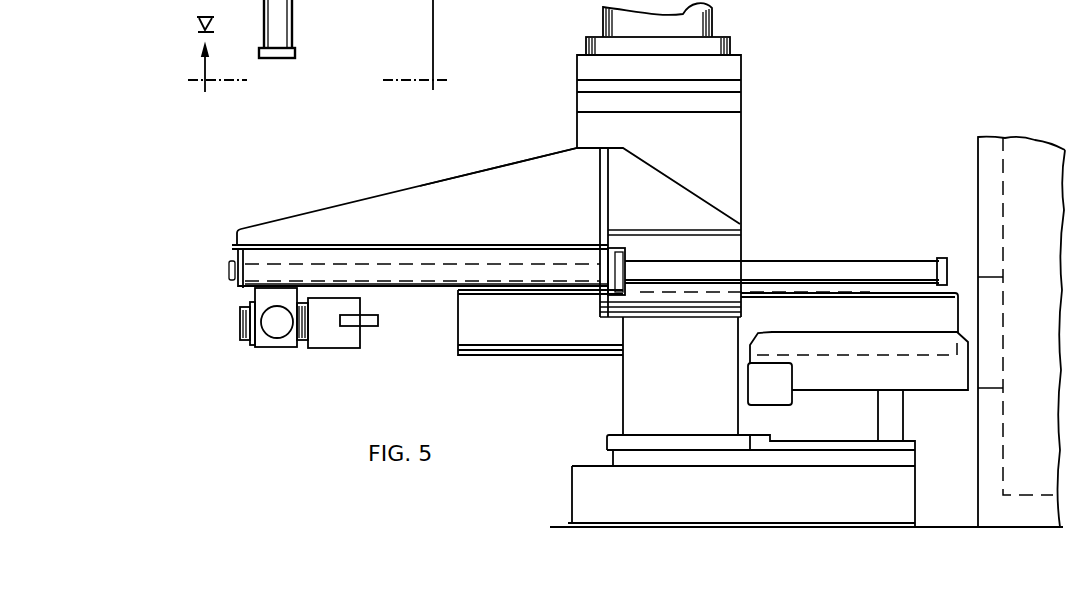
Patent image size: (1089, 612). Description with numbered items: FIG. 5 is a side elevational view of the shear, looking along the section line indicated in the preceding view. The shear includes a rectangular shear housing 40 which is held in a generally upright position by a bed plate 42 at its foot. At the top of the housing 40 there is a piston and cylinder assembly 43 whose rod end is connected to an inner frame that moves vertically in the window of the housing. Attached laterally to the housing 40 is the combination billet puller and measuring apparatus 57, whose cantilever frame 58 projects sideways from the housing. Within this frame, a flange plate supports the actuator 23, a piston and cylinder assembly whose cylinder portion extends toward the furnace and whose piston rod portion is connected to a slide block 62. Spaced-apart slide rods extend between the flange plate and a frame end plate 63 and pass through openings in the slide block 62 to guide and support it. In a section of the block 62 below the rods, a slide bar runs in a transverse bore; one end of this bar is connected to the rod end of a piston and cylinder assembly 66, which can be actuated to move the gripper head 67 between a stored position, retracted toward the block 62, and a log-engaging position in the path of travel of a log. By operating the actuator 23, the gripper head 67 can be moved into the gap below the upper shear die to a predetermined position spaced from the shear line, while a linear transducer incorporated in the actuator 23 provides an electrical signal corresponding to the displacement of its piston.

The actuator 23 is at (832, 260).
The shear housing 40 is at (727, 130).
The bed plate 42 is at (572, 485).
The piston and cylinder assembly 43 is at (712, 22).
The combination billet puller and measuring apparatus 57 is at (447, 180).
The cantilever frame 58 is at (366, 200).
The slide block 62 is at (253, 295).
The frame end plate 63 is at (237, 258).
The piston and cylinder assembly 66 is at (293, 17).
The gripper head 67 is at (327, 348).